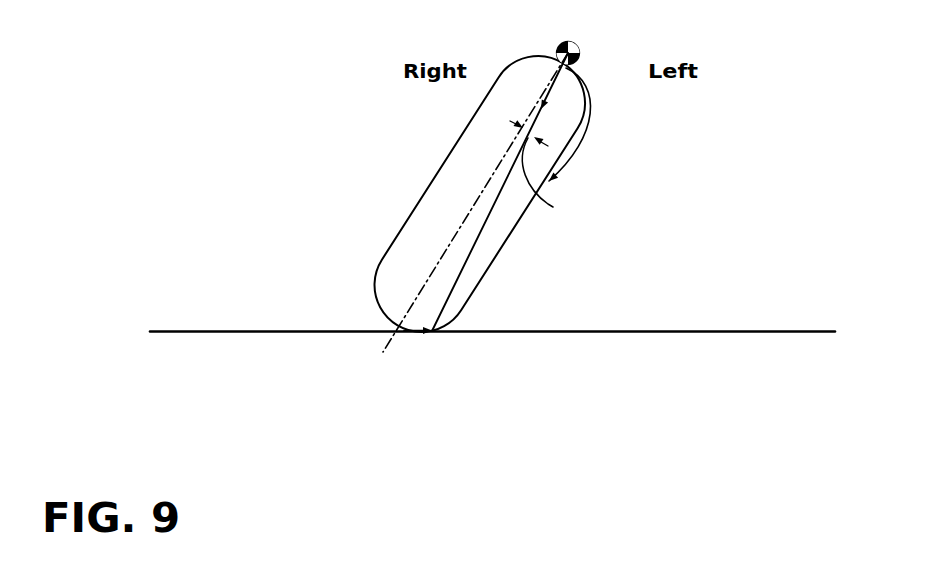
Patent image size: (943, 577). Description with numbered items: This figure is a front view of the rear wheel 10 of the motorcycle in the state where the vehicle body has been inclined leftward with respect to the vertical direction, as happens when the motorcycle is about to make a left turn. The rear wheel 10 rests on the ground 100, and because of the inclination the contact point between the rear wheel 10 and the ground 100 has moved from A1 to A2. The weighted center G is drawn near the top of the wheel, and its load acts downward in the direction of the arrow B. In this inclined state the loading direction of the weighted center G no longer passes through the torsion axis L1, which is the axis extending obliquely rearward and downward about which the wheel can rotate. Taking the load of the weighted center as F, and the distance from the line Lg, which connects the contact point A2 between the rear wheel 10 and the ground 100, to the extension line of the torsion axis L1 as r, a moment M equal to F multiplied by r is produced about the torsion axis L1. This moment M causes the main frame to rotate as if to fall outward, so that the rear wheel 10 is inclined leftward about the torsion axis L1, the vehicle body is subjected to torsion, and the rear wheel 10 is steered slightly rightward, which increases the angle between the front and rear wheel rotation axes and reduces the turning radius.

The rear wheel 10 is at (387, 251).
The ground 100 is at (703, 332).
The weighted center G is at (578, 46).
The load of the weighted center F is at (557, 68).
The arrow indicating loading direction B is at (555, 96).
The moment M is at (570, 124).
The distance r is at (542, 179).
The torsion axis L1 is at (510, 121).
The line connecting the contact point Lg is at (472, 250).
The contact point A1 is at (402, 341).
The contact point A2 is at (437, 343).